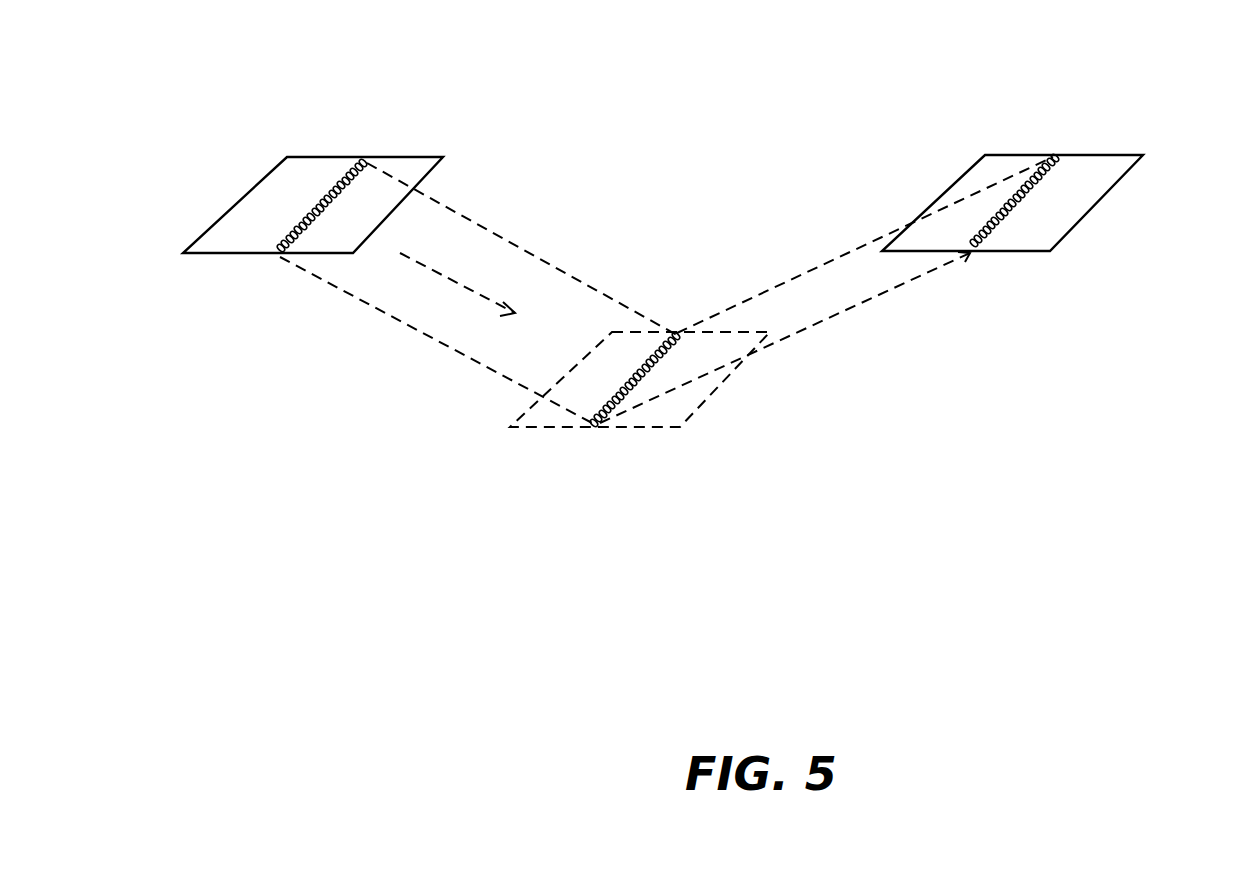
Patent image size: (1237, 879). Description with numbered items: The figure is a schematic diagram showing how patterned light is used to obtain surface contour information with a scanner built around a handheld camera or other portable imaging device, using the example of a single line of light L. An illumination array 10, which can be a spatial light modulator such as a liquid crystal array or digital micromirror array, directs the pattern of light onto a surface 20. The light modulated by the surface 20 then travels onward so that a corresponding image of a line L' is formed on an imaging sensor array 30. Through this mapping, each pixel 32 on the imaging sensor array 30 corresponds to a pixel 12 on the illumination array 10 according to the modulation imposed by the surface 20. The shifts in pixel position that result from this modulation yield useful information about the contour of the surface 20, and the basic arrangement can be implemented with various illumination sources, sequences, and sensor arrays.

The illumination array 10 is at (443, 157).
The pixel 12 is at (337, 180).
The surface 20 is at (685, 418).
The imaging sensor array 30 is at (1118, 180).
The pixel 32 is at (1027, 170).
The line of light L is at (241, 301).
The image of a line L' is at (996, 308).